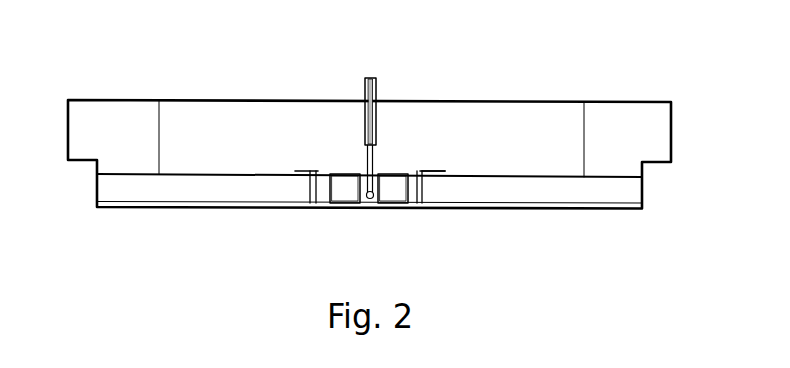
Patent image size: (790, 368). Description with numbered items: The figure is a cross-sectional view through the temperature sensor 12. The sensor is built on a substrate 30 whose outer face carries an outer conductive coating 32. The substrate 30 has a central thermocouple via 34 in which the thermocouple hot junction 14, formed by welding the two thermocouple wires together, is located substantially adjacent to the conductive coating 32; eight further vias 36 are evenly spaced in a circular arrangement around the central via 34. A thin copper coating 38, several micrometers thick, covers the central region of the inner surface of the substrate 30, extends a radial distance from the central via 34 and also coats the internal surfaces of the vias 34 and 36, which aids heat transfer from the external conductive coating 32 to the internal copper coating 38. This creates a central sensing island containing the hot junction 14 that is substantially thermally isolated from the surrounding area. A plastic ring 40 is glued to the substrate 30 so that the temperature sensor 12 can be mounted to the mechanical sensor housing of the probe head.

The temperature sensor 12 is at (690, 67).
The thermocouple hot junction 14 is at (375, 87).
The substrate 30 is at (106, 185).
The outer conductive coating 32 is at (187, 207).
The thermocouple via 34 is at (370, 207).
The further vias 36 is at (323, 195).
The copper coating 38 is at (428, 173).
The plastic ring 40 is at (660, 142).